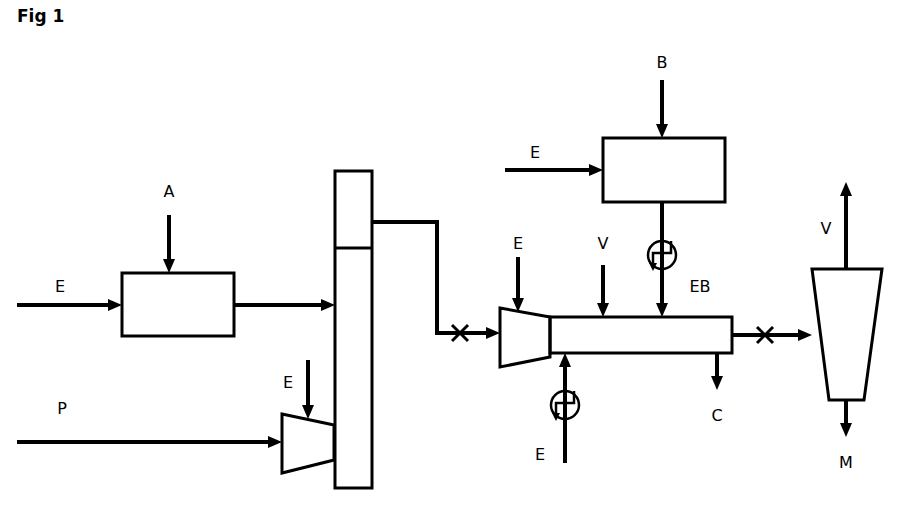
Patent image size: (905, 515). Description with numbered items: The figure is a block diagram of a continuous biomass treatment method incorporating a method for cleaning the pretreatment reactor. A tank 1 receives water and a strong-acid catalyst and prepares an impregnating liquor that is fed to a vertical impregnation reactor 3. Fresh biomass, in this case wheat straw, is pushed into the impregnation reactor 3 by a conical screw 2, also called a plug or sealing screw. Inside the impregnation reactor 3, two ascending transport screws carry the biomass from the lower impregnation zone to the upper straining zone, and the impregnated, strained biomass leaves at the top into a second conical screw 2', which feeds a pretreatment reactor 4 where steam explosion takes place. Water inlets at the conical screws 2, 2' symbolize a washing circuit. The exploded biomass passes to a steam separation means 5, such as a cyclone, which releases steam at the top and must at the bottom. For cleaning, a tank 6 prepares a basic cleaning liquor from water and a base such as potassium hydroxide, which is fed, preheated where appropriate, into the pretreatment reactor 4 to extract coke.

The tank 1 is at (178, 304).
The conical screw 2 is at (308, 443).
The second conical screw 2' is at (525, 337).
The impregnation reactor 3 is at (353, 329).
The pretreatment reactor 4 is at (641, 335).
The steam separation means 5 is at (847, 334).
The tank 6 is at (664, 170).